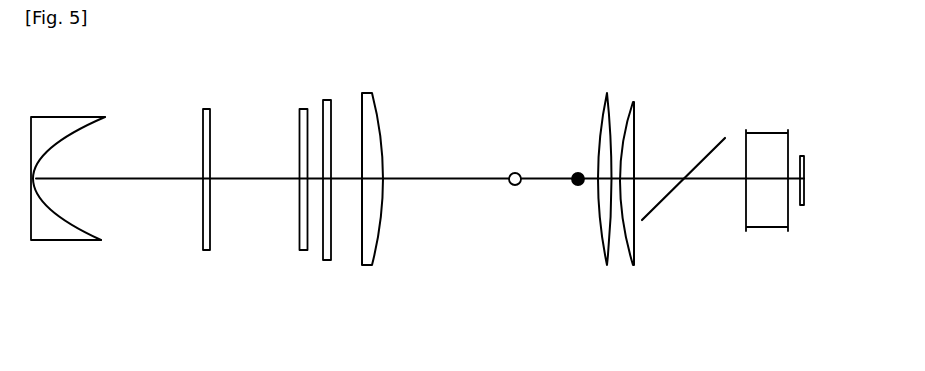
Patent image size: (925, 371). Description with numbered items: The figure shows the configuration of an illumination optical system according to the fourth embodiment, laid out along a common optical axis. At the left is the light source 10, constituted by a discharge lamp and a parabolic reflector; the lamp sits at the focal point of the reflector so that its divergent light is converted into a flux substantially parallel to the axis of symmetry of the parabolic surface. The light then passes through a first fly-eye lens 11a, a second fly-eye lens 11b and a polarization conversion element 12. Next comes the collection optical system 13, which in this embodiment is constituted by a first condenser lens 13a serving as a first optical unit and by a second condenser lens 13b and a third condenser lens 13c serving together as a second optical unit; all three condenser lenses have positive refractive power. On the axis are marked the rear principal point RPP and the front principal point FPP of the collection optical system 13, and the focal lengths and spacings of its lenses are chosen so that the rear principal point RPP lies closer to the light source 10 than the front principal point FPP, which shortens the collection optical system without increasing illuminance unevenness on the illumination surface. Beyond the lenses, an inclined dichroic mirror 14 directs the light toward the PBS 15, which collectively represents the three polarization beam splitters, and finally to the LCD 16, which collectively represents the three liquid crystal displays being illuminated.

The light source 10 is at (56, 122).
The first fly-eye lens 11a is at (208, 107).
The second fly-eye lens 11b is at (305, 108).
The polarization conversion element 12 is at (327, 260).
The collection optical system 13 is at (521, 228).
The first condenser lens 13a is at (380, 250).
The second condenser lens 13b is at (597, 243).
The third condenser lens 13c is at (650, 203).
The dichroic mirror 14 is at (675, 192).
The PBS 15 is at (785, 205).
The LCD 16 is at (815, 162).
The rear principal point RPP is at (508, 168).
The front principal point FPP is at (573, 170).